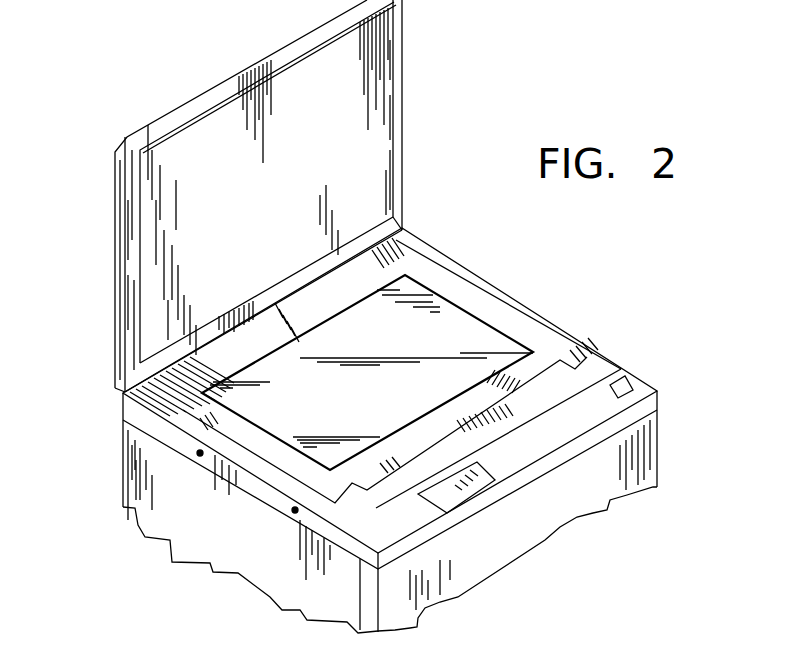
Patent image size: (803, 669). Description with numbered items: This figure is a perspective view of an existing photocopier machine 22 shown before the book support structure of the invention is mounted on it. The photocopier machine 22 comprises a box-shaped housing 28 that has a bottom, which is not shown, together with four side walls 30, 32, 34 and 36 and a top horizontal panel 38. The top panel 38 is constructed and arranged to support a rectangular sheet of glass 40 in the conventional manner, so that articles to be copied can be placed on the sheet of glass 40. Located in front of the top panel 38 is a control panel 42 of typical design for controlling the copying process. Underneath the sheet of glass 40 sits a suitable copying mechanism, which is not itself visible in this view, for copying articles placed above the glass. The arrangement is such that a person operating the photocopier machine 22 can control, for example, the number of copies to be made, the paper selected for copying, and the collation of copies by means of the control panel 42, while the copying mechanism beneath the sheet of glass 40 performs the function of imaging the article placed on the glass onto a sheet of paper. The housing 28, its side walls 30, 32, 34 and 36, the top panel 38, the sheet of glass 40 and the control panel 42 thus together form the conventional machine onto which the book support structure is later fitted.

The photocopier machine 22 is at (97, 248).
The housing 28 is at (658, 430).
The side wall 30 is at (262, 576).
The side wall 32 is at (478, 573).
The side wall 34 is at (552, 320).
The side wall 36 is at (124, 452).
The top horizontal panel 38 is at (385, 262).
The sheet of glass 40 is at (458, 328).
The control panel 42 is at (495, 468).